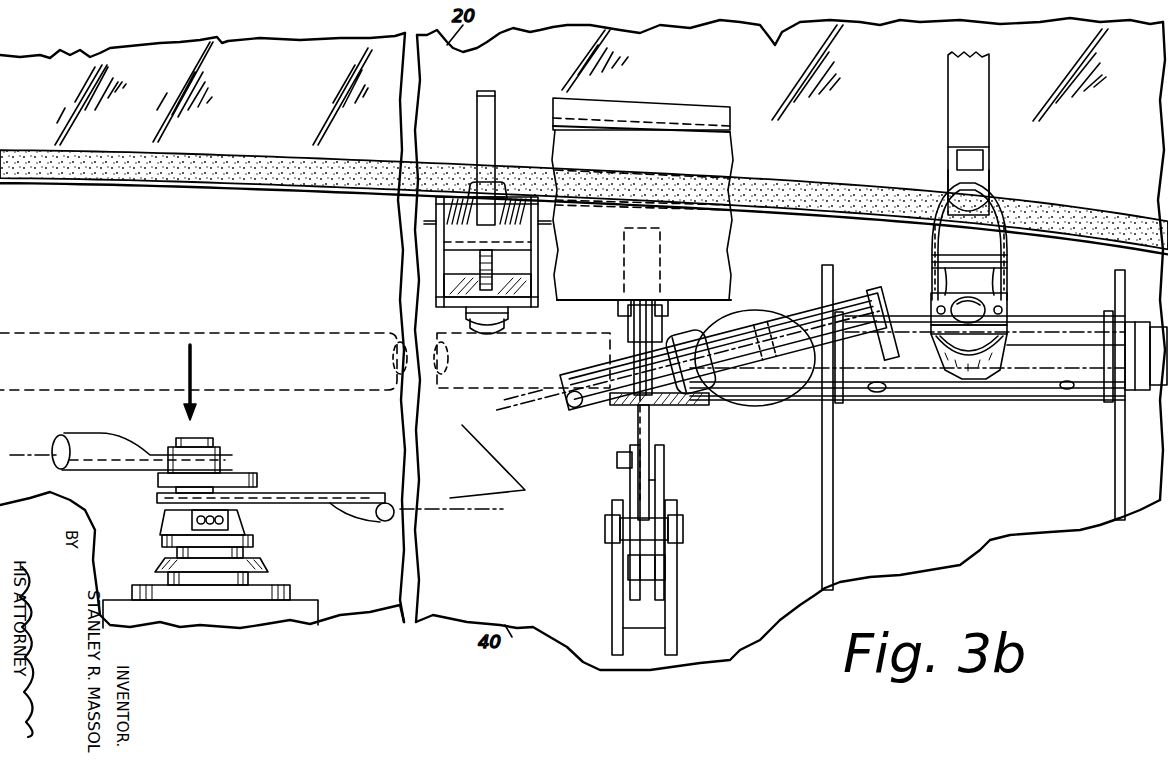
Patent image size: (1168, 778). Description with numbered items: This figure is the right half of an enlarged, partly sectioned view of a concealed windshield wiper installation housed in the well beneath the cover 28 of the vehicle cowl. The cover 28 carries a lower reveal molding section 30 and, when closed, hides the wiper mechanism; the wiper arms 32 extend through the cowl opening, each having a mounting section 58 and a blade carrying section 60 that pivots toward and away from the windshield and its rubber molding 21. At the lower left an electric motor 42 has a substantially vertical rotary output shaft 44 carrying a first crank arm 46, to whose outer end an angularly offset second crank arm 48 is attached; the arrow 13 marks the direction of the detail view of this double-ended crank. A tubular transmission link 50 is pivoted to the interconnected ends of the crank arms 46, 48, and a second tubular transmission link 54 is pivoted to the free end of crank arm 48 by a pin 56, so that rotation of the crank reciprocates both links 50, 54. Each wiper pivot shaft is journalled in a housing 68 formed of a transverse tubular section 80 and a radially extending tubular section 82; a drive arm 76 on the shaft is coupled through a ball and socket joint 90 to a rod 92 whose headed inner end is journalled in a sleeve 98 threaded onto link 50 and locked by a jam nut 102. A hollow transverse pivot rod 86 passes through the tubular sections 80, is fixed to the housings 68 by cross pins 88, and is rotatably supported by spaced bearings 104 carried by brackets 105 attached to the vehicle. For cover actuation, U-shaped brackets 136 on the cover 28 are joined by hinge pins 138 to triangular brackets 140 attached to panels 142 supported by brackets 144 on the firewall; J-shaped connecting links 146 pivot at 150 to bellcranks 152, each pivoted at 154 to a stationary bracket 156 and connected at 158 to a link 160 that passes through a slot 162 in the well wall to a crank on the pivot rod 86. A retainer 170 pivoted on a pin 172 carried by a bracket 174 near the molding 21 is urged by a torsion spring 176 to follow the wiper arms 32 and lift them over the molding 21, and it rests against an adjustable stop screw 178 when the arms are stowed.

The direction arrow 13 is at (203, 382).
The rubber molding 21 is at (364, 160).
The cover 28 is at (730, 162).
The lower reveal molding section 30 is at (695, 108).
The wiper arms 32 is at (950, 122).
The electric motor 42 is at (366, 613).
The rotary output shaft 44 is at (228, 516).
The first crank arm 46 is at (163, 522).
The second crank arm 48 is at (246, 473).
The tubular transmission link 50 is at (565, 380).
The second tubular transmission link 54 is at (108, 433).
The pin 56 is at (205, 440).
The mounting section 58 is at (958, 168).
The blade carrying section 60 is at (955, 78).
The housing 68 is at (1048, 287).
The drive arm 76 is at (996, 345).
The tubular section 80 is at (948, 400).
The radially extending tubular section 82 is at (932, 283).
The pivot rod 86 is at (65, 333).
The cross pins 88 is at (876, 392).
The ball and socket joint 90 is at (1007, 308).
The rod 92 is at (886, 298).
The sleeve 98 is at (798, 306).
The jam nut 102 is at (712, 398).
The bearings 104 is at (808, 398).
The brackets 105 is at (833, 523).
The U-shaped brackets 136 is at (620, 305).
The hinge pins 138 is at (662, 272).
The triangular brackets 140 is at (634, 352).
The panels 142 is at (614, 410).
The brackets 144 is at (660, 405).
The curved connecting links 146 is at (650, 445).
The pivotal connection 150 is at (617, 460).
The bellcranks 152 is at (630, 484).
The intermediate pivotal connection 154 is at (684, 527).
The stationary bracket 156 is at (680, 591).
The pivotal connection 158 is at (665, 565).
The link 160 is at (664, 490).
The slots 162 is at (668, 500).
The retainers 170 is at (482, 91).
The pins 172 is at (537, 215).
The brackets 174 is at (535, 252).
The torsion spring 176 is at (492, 225).
The adjustable stop screws 178 is at (508, 322).